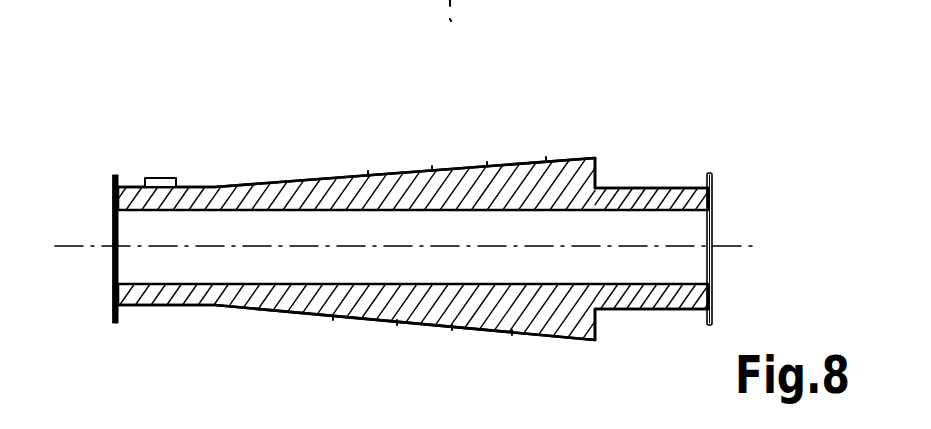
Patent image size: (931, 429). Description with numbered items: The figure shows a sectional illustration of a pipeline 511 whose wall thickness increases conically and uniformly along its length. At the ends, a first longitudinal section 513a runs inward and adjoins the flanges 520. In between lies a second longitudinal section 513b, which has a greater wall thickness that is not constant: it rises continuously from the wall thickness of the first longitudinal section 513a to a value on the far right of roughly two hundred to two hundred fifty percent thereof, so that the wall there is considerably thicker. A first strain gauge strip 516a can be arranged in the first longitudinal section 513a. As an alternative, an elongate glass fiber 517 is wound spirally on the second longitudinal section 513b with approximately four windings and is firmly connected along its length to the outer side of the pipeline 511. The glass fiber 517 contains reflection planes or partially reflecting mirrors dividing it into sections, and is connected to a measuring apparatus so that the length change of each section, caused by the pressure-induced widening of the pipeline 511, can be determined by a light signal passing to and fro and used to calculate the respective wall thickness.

The pipeline 511 is at (143, 103).
The first longitudinal section 513a is at (197, 177).
The second longitudinal section 513b is at (523, 133).
The first strain gauge strip 516a is at (155, 177).
The glass fiber 517 is at (368, 173).
The flanges 520 is at (106, 172).